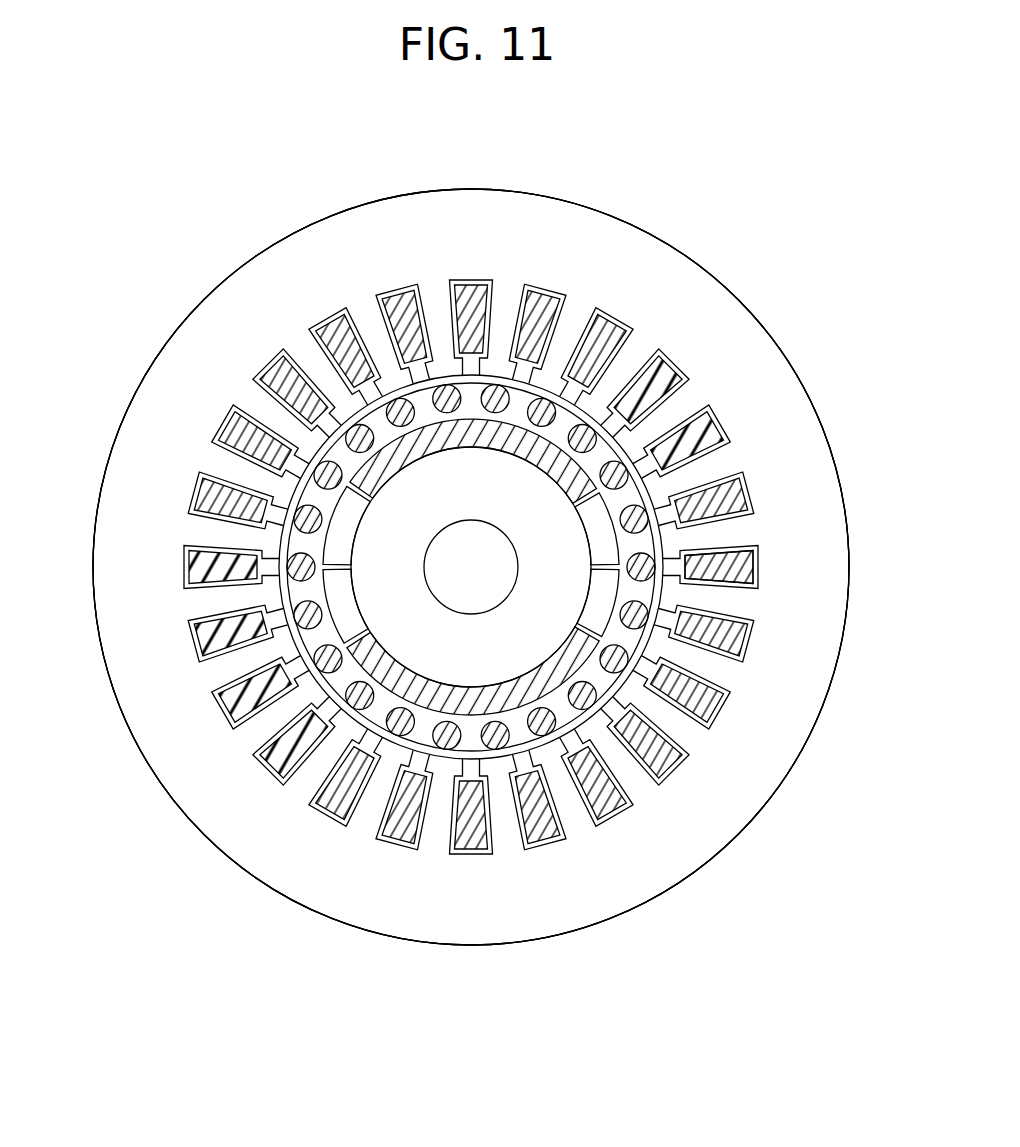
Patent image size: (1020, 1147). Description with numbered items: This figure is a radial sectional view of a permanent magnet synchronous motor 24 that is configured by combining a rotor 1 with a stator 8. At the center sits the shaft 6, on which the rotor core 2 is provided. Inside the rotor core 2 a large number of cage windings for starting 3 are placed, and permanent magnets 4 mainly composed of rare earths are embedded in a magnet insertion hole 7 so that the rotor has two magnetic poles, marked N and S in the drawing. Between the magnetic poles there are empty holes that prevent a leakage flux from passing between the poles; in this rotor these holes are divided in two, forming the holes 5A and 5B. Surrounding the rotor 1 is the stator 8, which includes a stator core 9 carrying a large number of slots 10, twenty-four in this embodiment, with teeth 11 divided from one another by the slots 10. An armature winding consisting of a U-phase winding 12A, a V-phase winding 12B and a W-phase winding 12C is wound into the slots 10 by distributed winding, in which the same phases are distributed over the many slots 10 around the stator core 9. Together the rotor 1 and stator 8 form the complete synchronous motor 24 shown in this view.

The rotor 1 is at (500, 523).
The rotor core 2 is at (471, 567).
The cage winding for starting 3 is at (471, 567).
The permanent magnet 4 is at (473, 460).
The hole 5A is at (563, 529).
The hole 5B is at (574, 602).
The shaft 6 is at (471, 567).
The magnet insertion hole 7 is at (473, 662).
The stator 8 is at (471, 567).
The stator core 9 is at (482, 567).
The slot 10 is at (784, 491).
The tooth 11 is at (803, 551).
The U-phase winding 12A is at (194, 726).
The V-phase winding 12B is at (775, 707).
The W-phase winding 12C is at (651, 299).
The synchronous motor 24 is at (443, 567).